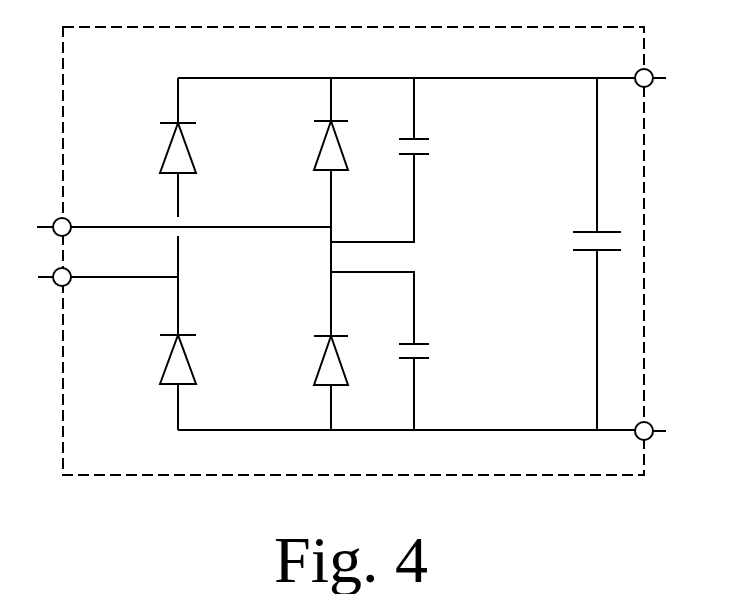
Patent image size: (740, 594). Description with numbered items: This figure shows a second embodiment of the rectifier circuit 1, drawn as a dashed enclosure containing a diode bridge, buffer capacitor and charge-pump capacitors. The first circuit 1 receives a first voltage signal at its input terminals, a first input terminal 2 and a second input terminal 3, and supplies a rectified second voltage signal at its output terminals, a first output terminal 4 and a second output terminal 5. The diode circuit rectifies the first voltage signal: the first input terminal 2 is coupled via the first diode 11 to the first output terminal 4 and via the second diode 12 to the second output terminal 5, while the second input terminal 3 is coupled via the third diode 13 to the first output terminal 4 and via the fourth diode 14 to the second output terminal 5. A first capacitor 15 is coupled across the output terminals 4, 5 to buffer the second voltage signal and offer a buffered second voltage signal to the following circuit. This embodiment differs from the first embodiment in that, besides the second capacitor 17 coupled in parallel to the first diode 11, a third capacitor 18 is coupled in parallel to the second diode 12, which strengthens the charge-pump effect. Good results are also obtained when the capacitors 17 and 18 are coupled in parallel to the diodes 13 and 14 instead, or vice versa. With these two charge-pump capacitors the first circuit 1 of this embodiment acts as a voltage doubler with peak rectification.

The first circuit 1 is at (353, 273).
The first input terminal 2 is at (182, 212).
The second input terminal 3 is at (105, 291).
The first output terminal 4 is at (652, 91).
The second output terminal 5 is at (651, 414).
The first diode 11 is at (313, 145).
The second diode 12 is at (313, 360).
The third diode 13 is at (158, 148).
The fourth diode 14 is at (160, 359).
The first capacitor 15 is at (578, 243).
The second capacitor 17 is at (434, 151).
The third capacitor 18 is at (434, 354).